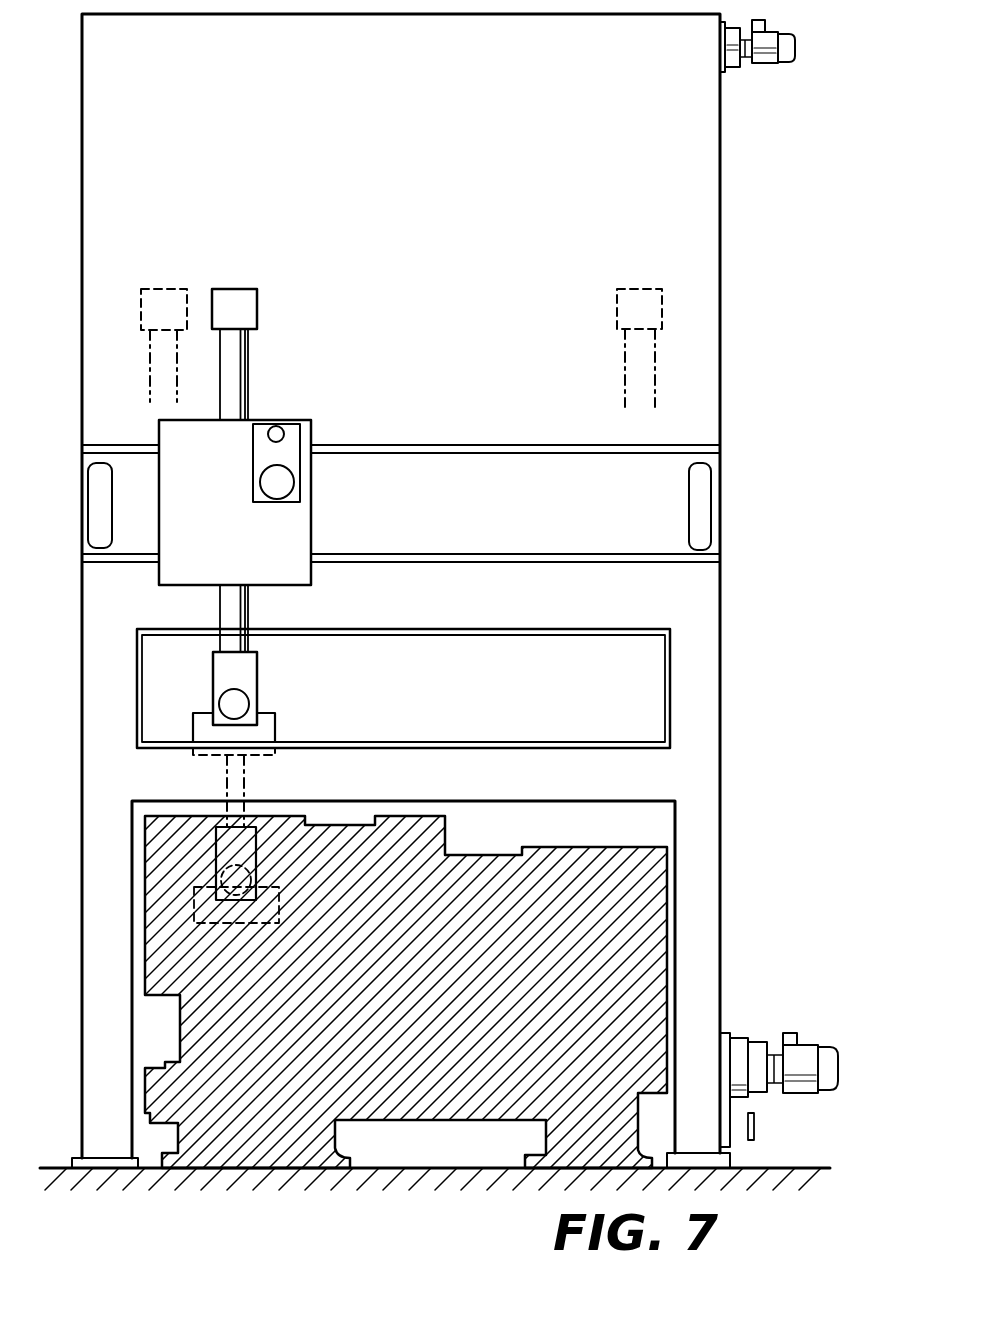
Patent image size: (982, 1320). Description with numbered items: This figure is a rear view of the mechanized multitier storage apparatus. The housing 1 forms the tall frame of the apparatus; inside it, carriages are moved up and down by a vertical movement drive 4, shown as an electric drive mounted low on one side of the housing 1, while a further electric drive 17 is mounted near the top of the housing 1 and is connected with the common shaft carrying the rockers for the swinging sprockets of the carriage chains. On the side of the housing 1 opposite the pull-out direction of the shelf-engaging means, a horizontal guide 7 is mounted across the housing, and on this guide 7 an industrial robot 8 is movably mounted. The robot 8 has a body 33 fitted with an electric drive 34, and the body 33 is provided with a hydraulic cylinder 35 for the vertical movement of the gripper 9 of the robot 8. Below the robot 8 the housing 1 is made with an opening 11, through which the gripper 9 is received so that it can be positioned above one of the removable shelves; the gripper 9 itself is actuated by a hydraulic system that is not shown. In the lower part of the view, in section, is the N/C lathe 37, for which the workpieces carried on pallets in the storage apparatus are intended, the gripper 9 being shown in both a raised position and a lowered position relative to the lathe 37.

The housing 1 is at (715, 353).
The vertical movement drive 4 is at (802, 1060).
The horizontal guide 7 is at (512, 465).
The industrial robot 8 is at (273, 413).
The gripper 9 is at (203, 722).
The opening 11 is at (581, 647).
The electric drive 17 is at (769, 62).
The body 33 is at (170, 559).
The electric drive 34 is at (285, 484).
The hydraulic cylinder 35 is at (234, 369).
The N/C lathe 37 is at (650, 878).